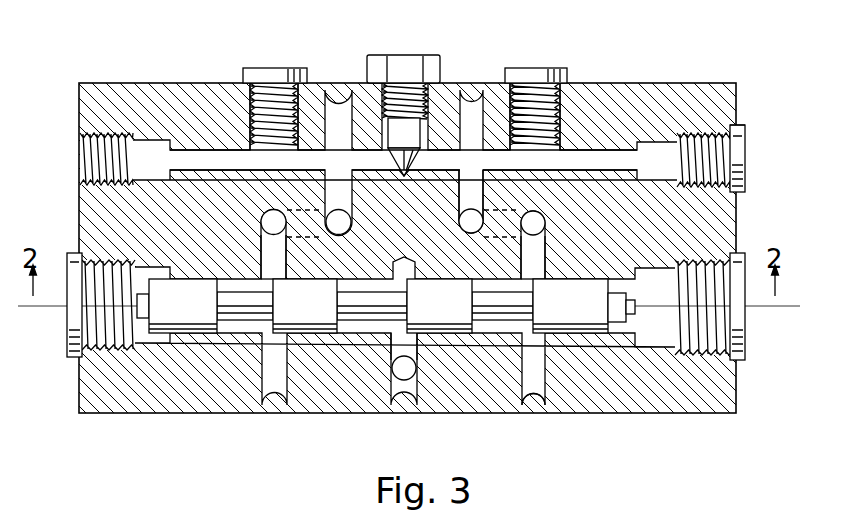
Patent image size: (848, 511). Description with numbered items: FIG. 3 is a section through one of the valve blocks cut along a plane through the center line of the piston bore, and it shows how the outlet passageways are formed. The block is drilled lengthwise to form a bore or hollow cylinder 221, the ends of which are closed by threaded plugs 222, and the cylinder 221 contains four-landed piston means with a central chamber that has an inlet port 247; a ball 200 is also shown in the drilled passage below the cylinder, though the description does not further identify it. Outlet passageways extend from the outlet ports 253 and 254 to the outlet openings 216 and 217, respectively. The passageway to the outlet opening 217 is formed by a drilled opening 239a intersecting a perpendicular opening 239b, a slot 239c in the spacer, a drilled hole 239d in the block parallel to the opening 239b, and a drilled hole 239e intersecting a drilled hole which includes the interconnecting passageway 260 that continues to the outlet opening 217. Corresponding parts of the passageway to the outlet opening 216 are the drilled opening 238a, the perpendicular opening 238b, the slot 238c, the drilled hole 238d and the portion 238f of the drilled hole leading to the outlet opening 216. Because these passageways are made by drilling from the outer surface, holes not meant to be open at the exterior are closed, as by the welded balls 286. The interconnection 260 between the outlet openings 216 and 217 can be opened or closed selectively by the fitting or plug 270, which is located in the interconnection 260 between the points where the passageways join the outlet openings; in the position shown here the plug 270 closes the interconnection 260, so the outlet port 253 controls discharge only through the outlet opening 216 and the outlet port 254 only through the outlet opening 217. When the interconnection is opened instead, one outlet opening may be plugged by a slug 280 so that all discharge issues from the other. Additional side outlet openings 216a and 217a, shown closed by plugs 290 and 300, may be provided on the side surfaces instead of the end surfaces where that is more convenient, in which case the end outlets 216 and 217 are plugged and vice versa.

The check ball 200 is at (402, 380).
The outlet opening 216 is at (105, 162).
The additional outlet opening 216a is at (251, 90).
The outlet opening 217 is at (718, 167).
The additional outlet opening 217a is at (572, 82).
The bore or hollow cylinder 221 is at (630, 333).
The threaded plug 222 is at (68, 352).
The drilled opening 238a is at (262, 253).
The perpendicular opening 238b is at (260, 211).
The slot 238c is at (291, 210).
The drilled hole 238d is at (395, 262).
The portion of drilled hole 238f is at (203, 158).
The drilled opening 239a is at (536, 249).
The perpendicular opening 239b is at (546, 222).
The slot 239c is at (508, 212).
The drilled hole 239d is at (467, 234).
The drilled hole 239e is at (468, 182).
The inlet port 247 is at (398, 343).
The outlet port 253 is at (281, 278).
The outlet port 254 is at (540, 268).
The interconnection 260 is at (383, 167).
The fitting 270 is at (407, 181).
The slug 280 is at (745, 132).
The welded ball 286 is at (534, 406).
The plug 290 is at (262, 68).
The plug 300 is at (545, 68).